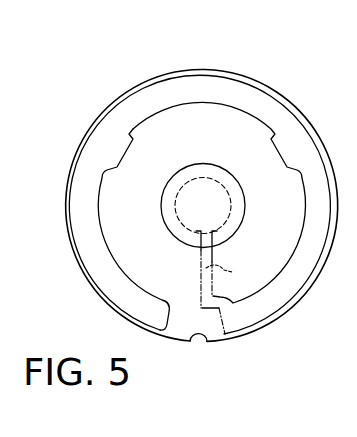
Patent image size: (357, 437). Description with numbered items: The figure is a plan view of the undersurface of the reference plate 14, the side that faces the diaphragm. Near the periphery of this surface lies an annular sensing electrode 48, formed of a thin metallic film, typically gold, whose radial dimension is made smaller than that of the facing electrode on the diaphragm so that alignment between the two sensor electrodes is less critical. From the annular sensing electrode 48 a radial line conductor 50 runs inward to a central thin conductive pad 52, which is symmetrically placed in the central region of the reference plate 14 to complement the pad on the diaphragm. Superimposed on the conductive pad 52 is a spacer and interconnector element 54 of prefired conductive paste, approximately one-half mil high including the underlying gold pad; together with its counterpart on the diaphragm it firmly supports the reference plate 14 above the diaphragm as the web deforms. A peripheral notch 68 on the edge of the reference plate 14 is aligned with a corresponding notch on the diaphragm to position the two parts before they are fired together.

The reference plate 14 is at (225, 69).
The sensing electrode 48 is at (277, 112).
The radial line conductor 50 is at (232, 272).
The conductive pad 52 is at (199, 178).
The spacer and interconnector element 54 is at (246, 205).
The peripheral notch 68 is at (202, 344).